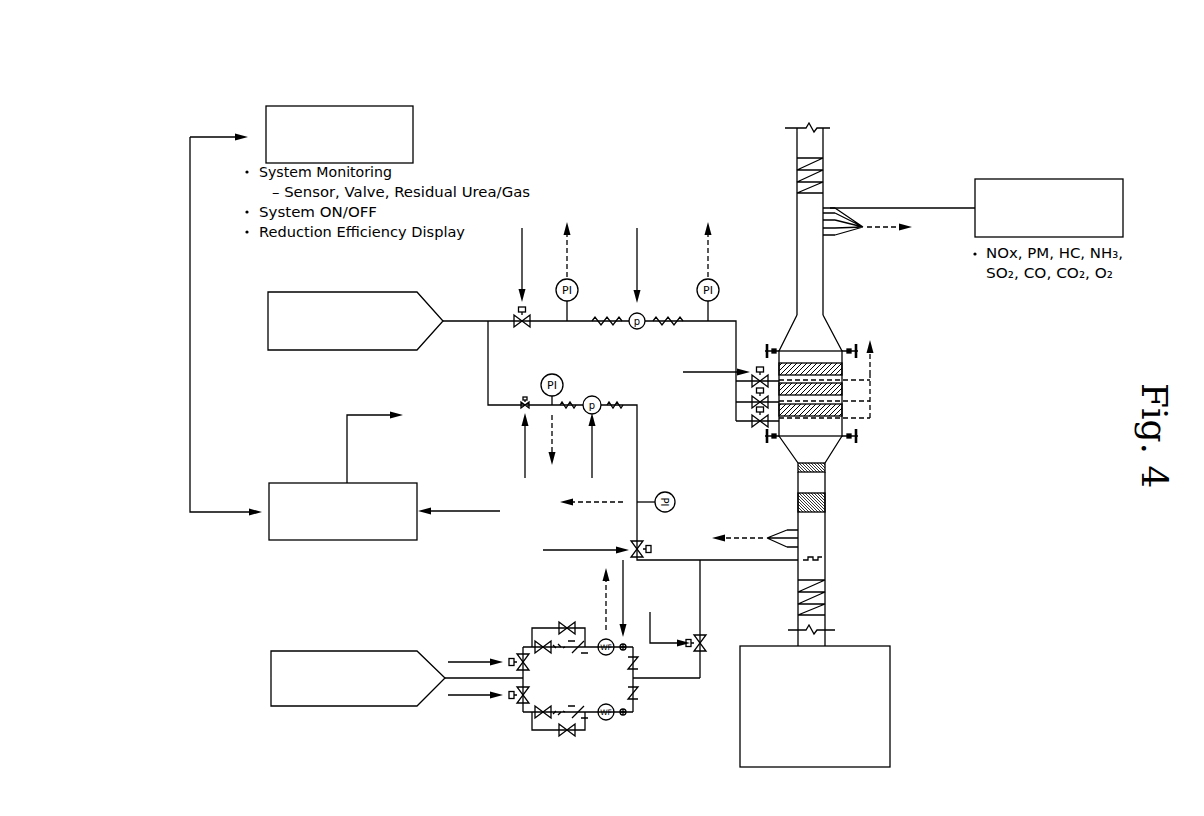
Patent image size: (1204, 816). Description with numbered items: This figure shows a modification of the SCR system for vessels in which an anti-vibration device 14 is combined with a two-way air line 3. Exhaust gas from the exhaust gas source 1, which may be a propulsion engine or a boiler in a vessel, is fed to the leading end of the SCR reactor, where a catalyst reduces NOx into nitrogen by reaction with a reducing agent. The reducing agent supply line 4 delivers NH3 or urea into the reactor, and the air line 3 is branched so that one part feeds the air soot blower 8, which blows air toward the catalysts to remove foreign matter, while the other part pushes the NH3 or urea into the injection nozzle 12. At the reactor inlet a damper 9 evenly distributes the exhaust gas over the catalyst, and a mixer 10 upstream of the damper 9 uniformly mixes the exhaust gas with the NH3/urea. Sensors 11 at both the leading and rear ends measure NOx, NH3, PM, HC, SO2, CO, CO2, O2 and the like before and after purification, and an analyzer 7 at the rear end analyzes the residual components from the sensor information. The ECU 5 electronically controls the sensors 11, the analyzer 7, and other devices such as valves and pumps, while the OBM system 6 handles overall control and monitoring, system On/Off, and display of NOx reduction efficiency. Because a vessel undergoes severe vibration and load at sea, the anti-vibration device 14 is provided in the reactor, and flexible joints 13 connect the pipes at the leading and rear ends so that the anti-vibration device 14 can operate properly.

The exhaust gas source 1 is at (814, 767).
The air line 3 is at (427, 303).
The reducing agent supply line 4 is at (373, 650).
The ECU 5 is at (407, 473).
The OBM system 6 is at (388, 103).
The analyzer 7 is at (1048, 178).
The air soot blower 8 is at (855, 418).
The damper 9 is at (798, 466).
The mixer 10 is at (798, 500).
The sensors 11 is at (861, 232).
The injection nozzle 12 is at (810, 559).
The flexible joints 13 is at (818, 158).
The anti-vibration device 14 is at (848, 352).